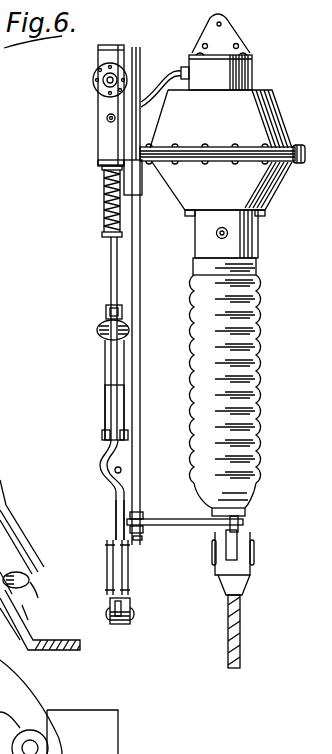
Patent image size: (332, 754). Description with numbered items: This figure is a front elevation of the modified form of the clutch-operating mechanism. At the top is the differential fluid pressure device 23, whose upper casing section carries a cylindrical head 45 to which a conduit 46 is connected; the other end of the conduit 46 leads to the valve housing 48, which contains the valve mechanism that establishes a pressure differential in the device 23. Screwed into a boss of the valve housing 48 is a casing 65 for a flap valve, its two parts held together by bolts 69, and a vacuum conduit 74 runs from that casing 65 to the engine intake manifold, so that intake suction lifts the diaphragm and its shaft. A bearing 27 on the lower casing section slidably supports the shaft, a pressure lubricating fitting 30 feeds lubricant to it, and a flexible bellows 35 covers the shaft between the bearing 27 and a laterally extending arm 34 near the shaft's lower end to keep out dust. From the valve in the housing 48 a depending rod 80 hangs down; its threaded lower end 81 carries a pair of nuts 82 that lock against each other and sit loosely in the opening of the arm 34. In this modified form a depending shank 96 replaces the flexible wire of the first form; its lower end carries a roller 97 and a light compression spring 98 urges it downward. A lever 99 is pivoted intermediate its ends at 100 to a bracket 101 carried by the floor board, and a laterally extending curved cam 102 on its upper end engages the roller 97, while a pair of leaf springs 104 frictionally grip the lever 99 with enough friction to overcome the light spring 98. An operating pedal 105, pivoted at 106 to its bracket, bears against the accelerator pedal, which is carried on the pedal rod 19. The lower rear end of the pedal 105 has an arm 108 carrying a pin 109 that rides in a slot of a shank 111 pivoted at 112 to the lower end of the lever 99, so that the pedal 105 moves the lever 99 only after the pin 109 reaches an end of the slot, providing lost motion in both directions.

The pedal rod 19 is at (105, 474).
The differential fluid pressure device 23 is at (289, 118).
The bearing 27 is at (250, 243).
The pressure lubricating fitting 30 is at (216, 236).
The laterally extending arm 34 is at (202, 526).
The flexible bellows 35 is at (258, 330).
The cylindrical head 45 is at (252, 73).
The conduit 46 is at (167, 84).
The valve housing 48 is at (93, 149).
The casing 65 is at (93, 90).
The bolts 69 is at (100, 72).
The vacuum conduit 74 is at (106, 80).
The depending rod 80 is at (140, 482).
The threaded lower end of rod 81 is at (106, 119).
The nuts 82 is at (146, 522).
The depending shank 96 is at (111, 283).
The roller 97 is at (107, 311).
The light compression spring 98 is at (106, 220).
The lever 99 is at (116, 522).
The pivot 100 is at (104, 437).
The bracket 101 is at (106, 405).
The curved cam 102 is at (106, 338).
The leaf springs 104 is at (111, 570).
The operating pedal 105 is at (12, 477).
The pivotal connection 106 is at (2, 506).
The arm 108 is at (30, 590).
The pin 109 is at (24, 614).
The shank 111 is at (125, 614).
The pivotal connection 112 is at (132, 626).